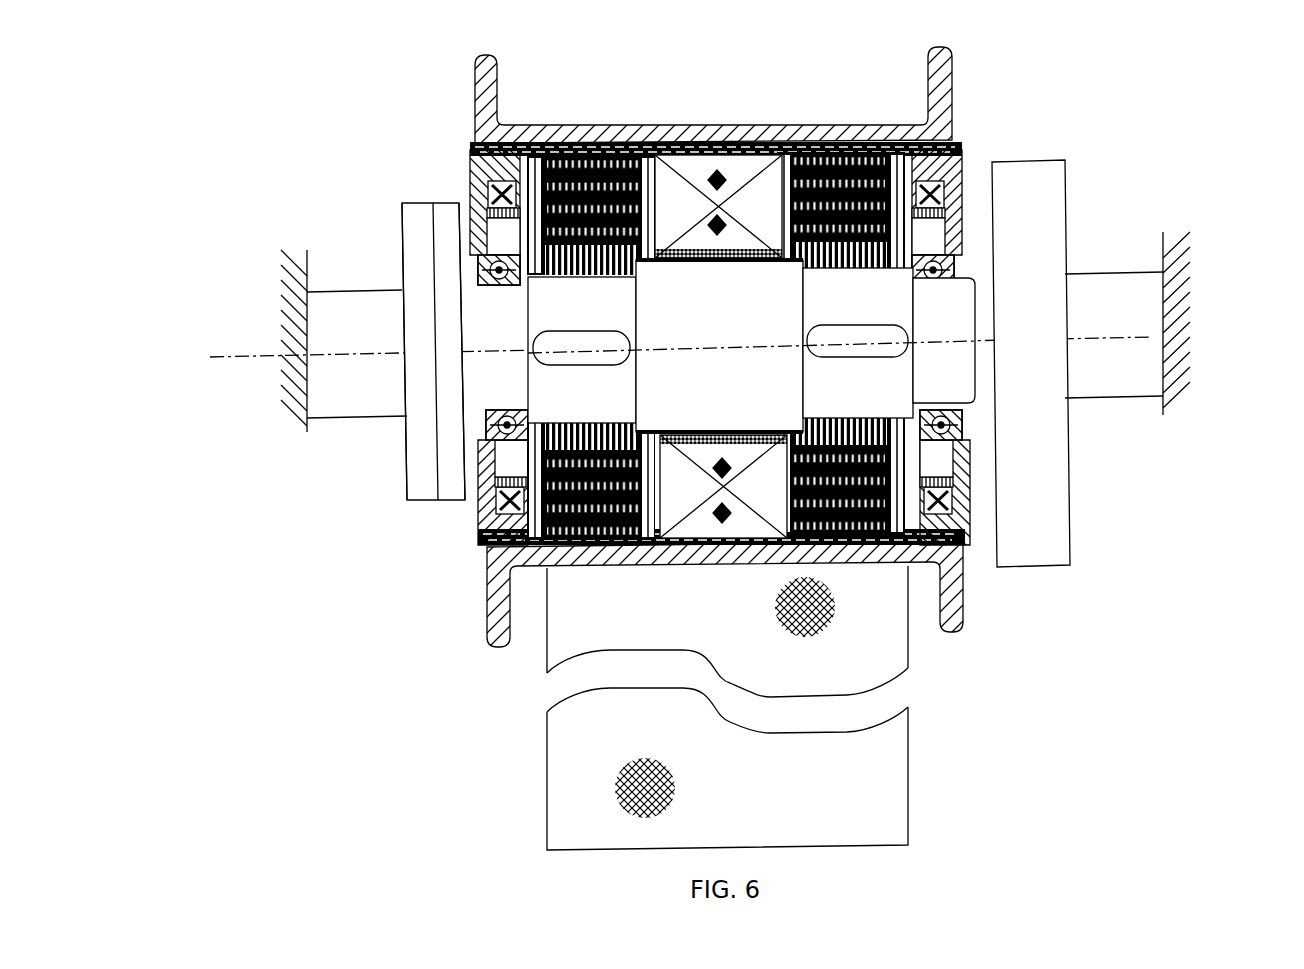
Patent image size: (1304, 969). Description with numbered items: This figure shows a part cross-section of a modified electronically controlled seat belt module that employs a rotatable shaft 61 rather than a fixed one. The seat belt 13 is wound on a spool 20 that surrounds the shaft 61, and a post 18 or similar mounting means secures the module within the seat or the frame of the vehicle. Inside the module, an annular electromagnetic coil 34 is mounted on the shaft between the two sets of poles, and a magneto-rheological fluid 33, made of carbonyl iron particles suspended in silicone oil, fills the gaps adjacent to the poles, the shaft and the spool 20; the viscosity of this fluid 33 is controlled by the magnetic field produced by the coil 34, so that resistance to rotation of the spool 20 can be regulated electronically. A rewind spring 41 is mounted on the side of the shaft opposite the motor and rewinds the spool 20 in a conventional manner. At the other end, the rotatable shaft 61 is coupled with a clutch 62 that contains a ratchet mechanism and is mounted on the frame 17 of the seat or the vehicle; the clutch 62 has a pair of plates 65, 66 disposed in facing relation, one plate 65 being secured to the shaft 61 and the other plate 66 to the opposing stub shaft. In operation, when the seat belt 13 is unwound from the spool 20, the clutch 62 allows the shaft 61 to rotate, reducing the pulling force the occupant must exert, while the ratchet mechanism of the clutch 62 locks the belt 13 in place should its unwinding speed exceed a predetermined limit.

The seat belt 13 is at (878, 778).
The frame 17 is at (290, 298).
The post 18 is at (380, 385).
The spool 20 is at (680, 563).
The magneto-rheological fluid 33 is at (594, 152).
The electromagnetic coil 34 is at (735, 165).
The rewind spring 41 is at (1040, 263).
The rotatable shaft 61 is at (940, 310).
The clutch 62 is at (414, 349).
The plate 65 is at (452, 487).
The plate 66 is at (421, 482).